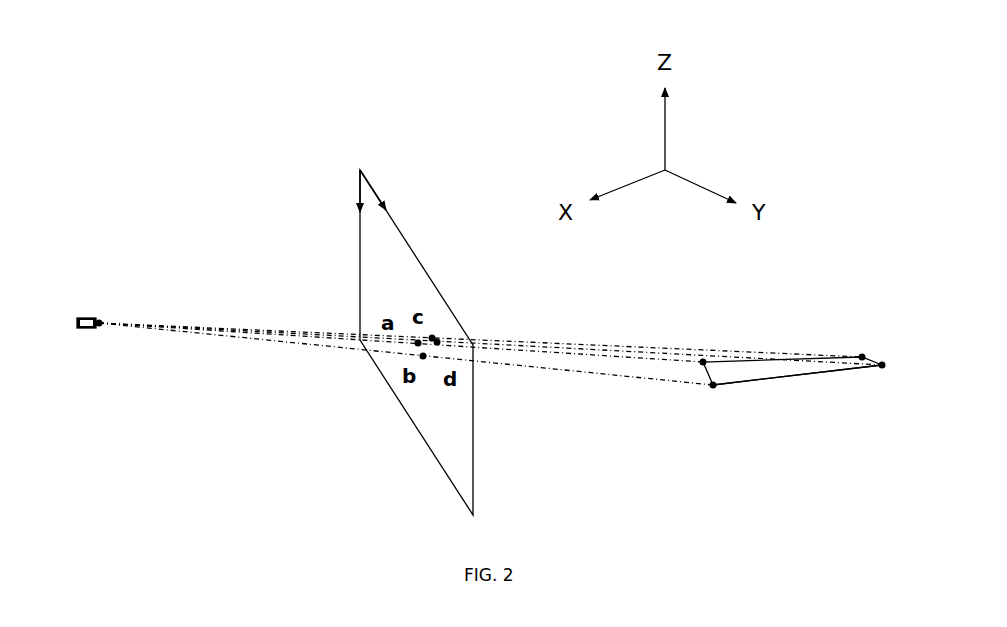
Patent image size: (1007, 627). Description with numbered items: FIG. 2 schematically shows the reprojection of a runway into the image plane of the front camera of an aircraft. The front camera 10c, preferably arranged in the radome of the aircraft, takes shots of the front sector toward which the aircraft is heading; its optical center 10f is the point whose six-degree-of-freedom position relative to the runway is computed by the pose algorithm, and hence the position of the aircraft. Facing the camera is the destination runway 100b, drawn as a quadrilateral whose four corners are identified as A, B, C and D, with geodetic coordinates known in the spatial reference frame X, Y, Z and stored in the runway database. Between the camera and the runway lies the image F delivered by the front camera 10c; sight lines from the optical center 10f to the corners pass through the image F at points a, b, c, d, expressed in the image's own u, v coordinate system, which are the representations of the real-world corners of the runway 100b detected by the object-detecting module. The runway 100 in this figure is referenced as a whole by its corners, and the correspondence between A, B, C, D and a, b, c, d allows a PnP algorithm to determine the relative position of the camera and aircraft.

The front camera 10c is at (92, 315).
The optical center 10f is at (102, 328).
The image F is at (418, 262).
The object 100 is at (758, 316).
The destination runway 100b is at (770, 372).